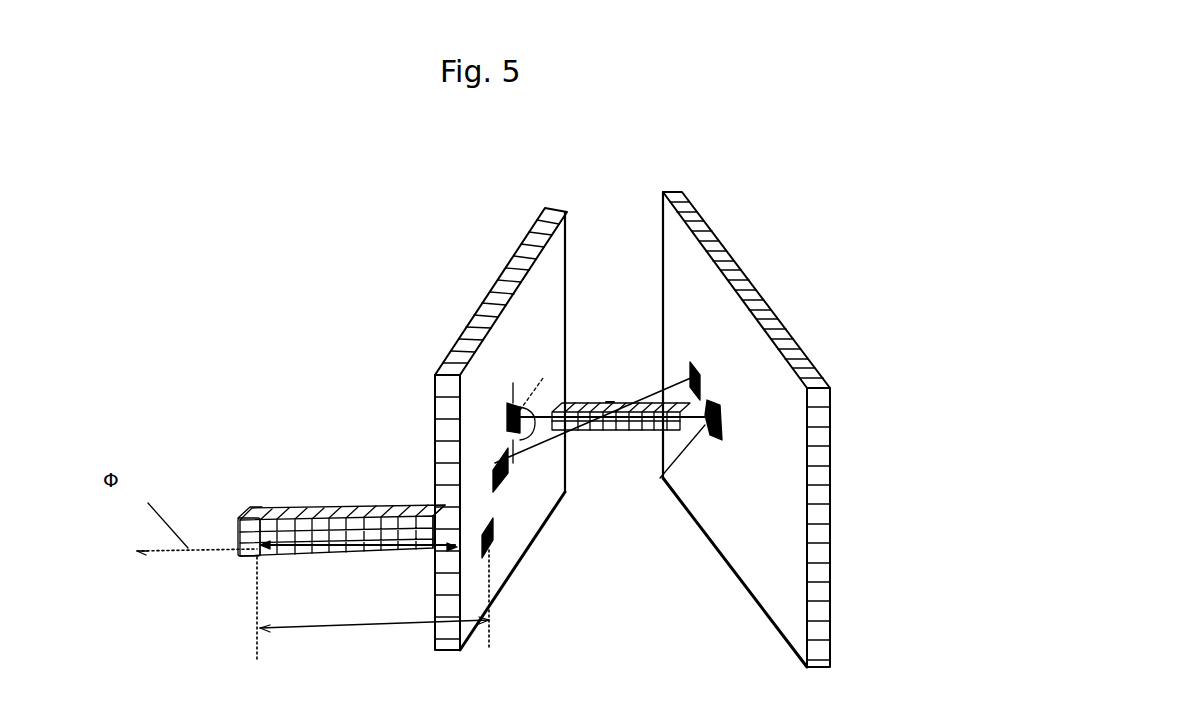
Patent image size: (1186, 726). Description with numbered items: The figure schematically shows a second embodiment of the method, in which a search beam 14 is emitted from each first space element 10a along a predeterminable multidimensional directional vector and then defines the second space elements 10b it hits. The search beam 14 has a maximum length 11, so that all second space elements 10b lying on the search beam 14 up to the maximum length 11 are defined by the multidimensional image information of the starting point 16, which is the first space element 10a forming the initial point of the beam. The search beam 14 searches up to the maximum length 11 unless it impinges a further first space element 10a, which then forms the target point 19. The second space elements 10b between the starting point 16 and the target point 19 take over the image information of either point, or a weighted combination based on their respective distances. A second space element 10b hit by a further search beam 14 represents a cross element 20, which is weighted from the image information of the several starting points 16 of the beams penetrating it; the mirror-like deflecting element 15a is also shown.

The first space element 10a is at (450, 418).
The second space element 10b is at (247, 543).
The maximum length 11 is at (343, 625).
The search beam 14 is at (327, 517).
The deflection mirror 15a is at (548, 352).
The starting point 16 is at (518, 408).
The target point 19 is at (715, 437).
The cross element 20 is at (608, 405).